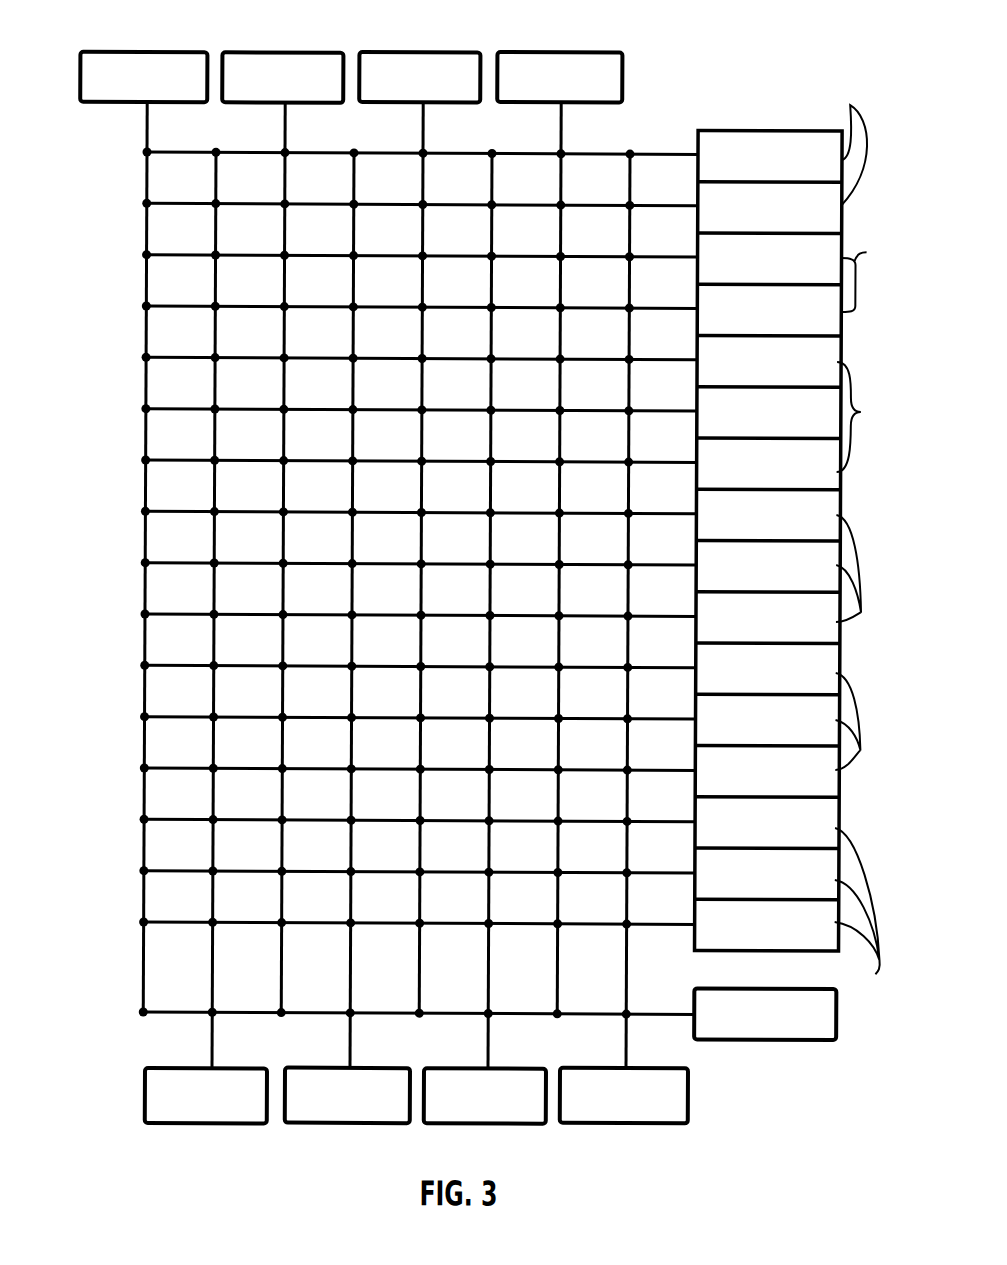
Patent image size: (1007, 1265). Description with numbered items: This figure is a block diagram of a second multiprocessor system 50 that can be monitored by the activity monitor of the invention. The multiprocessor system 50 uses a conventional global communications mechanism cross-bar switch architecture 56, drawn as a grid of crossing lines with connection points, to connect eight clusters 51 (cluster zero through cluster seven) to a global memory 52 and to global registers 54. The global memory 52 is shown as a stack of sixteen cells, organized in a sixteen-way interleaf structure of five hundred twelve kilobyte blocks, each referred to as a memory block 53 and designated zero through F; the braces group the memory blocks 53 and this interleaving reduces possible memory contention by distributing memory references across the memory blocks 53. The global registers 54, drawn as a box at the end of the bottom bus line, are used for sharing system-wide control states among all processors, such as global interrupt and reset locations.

The multiprocessor system 50 is at (79, 257).
The cluster 51 is at (384, 564).
The global memory 52 is at (775, 105).
The memory block 53 is at (854, 545).
The global registers 54 is at (838, 1038).
The global communications mechanism cross-bar switch architecture 56 is at (143, 543).